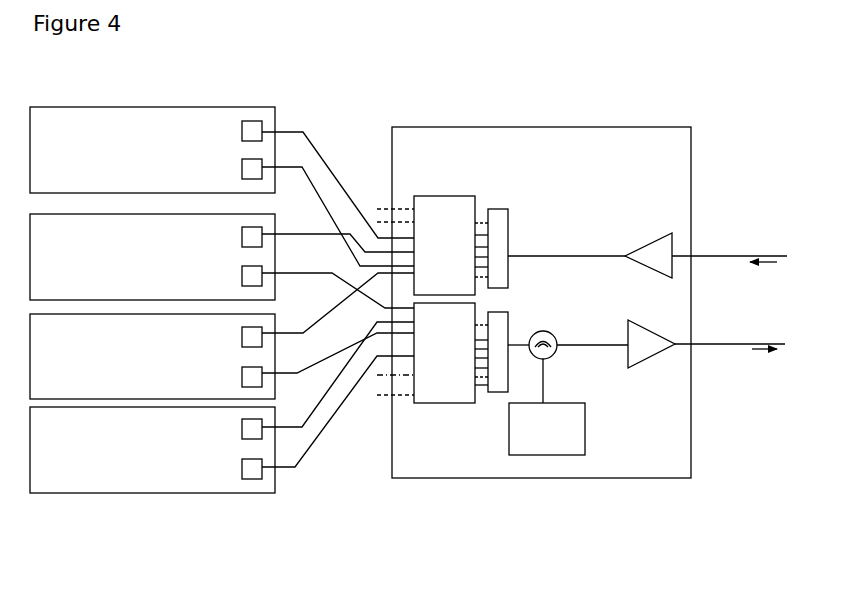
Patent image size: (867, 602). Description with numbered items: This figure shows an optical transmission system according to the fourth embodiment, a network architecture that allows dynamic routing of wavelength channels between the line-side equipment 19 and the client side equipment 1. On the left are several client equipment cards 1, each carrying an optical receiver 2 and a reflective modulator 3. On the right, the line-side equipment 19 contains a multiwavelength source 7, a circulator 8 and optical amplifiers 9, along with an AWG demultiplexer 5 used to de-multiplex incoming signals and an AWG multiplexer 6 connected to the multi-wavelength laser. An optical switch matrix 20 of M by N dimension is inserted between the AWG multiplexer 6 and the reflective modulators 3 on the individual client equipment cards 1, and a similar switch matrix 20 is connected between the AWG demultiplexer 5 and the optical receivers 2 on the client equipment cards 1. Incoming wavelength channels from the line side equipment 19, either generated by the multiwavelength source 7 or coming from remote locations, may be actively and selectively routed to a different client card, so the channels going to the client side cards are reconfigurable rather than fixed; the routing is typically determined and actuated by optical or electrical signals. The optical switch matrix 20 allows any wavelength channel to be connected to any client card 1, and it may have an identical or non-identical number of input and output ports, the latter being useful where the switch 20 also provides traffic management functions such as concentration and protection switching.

The client equipment card 1 is at (113, 148).
The optical receiver 2 is at (238, 128).
The reflective modulator 3 is at (238, 166).
The AWG demultiplexer 5 is at (497, 233).
The AWG multiplexer 6 is at (497, 378).
The multiwavelength source 7 is at (558, 460).
The circulator 8 is at (562, 361).
The optical amplifier 9 is at (663, 282).
The line-side equipment 19 is at (572, 150).
The optical switch matrix 20 is at (430, 333).